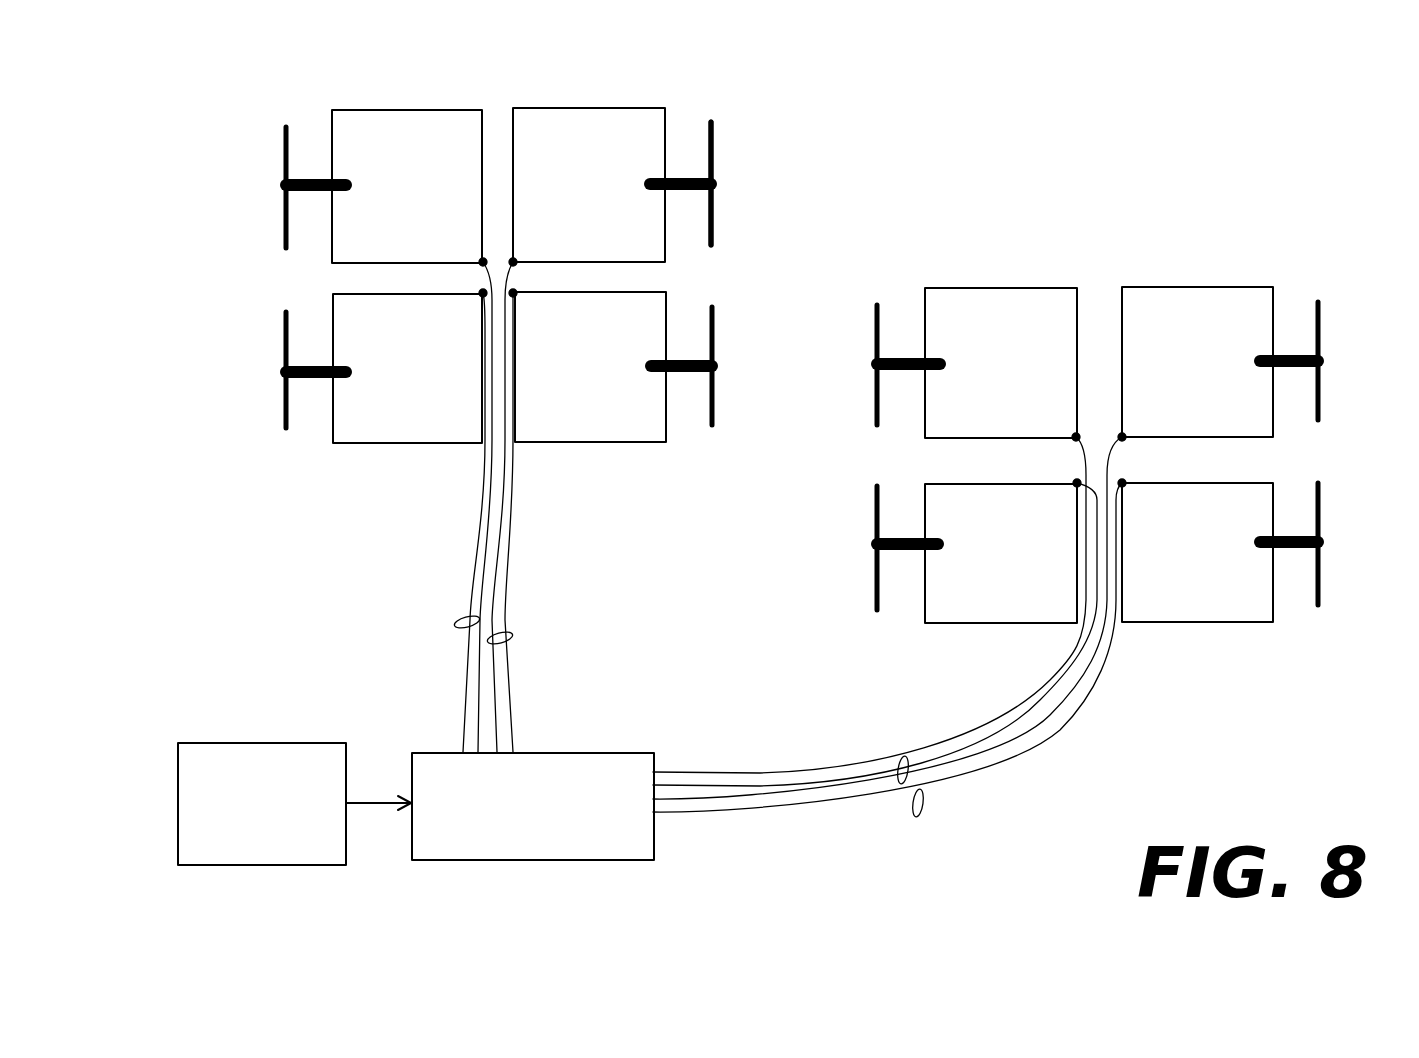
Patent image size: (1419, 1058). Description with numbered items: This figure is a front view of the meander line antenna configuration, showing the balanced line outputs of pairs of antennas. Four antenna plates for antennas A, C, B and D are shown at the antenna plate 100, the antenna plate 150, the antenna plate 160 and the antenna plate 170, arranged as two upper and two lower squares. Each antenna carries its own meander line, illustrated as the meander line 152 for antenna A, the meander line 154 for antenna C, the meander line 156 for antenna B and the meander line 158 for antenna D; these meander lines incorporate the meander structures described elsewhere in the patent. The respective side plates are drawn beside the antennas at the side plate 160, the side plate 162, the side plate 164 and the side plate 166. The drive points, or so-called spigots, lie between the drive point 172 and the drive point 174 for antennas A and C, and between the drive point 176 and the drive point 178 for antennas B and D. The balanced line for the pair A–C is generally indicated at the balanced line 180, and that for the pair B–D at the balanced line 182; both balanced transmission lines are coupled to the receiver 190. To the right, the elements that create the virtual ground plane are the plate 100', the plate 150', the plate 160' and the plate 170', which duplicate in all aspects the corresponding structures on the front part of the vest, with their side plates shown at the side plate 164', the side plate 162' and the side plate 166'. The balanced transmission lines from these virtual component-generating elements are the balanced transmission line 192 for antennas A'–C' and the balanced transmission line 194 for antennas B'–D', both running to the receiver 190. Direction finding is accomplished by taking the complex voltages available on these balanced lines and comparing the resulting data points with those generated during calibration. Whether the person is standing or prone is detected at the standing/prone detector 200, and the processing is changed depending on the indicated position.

The antenna plate 100 is at (420, 167).
The antenna plate / side plate 160 is at (450, 165).
The meander line 152 is at (310, 192).
The meander line 156 is at (678, 180).
The side plate 164 is at (757, 183).
The antenna plate 150 is at (401, 392).
The side plate 162 is at (238, 370).
The meander line 154 is at (312, 380).
The antenna plate 170 is at (600, 391).
The meander line 158 is at (680, 362).
The side plate 166 is at (749, 366).
The drive point 172 is at (481, 262).
The drive point 174 is at (482, 294).
The drive point 176 is at (515, 262).
The drive point 178 is at (515, 294).
The balanced line 180 is at (454, 622).
The balanced line 182 is at (513, 639).
The receiver 190 is at (568, 754).
The standing/prone detector 200 is at (178, 775).
The plate 100' is at (1001, 342).
The plate 160' is at (1047, 342).
The side plate 164' is at (1338, 361).
The plate 150' is at (1001, 538).
The side plate 162' is at (863, 548).
The plate 170' is at (1204, 536).
The side plate 166' is at (1338, 544).
The balanced transmission line 192 is at (904, 756).
The balanced transmission line 194 is at (918, 817).